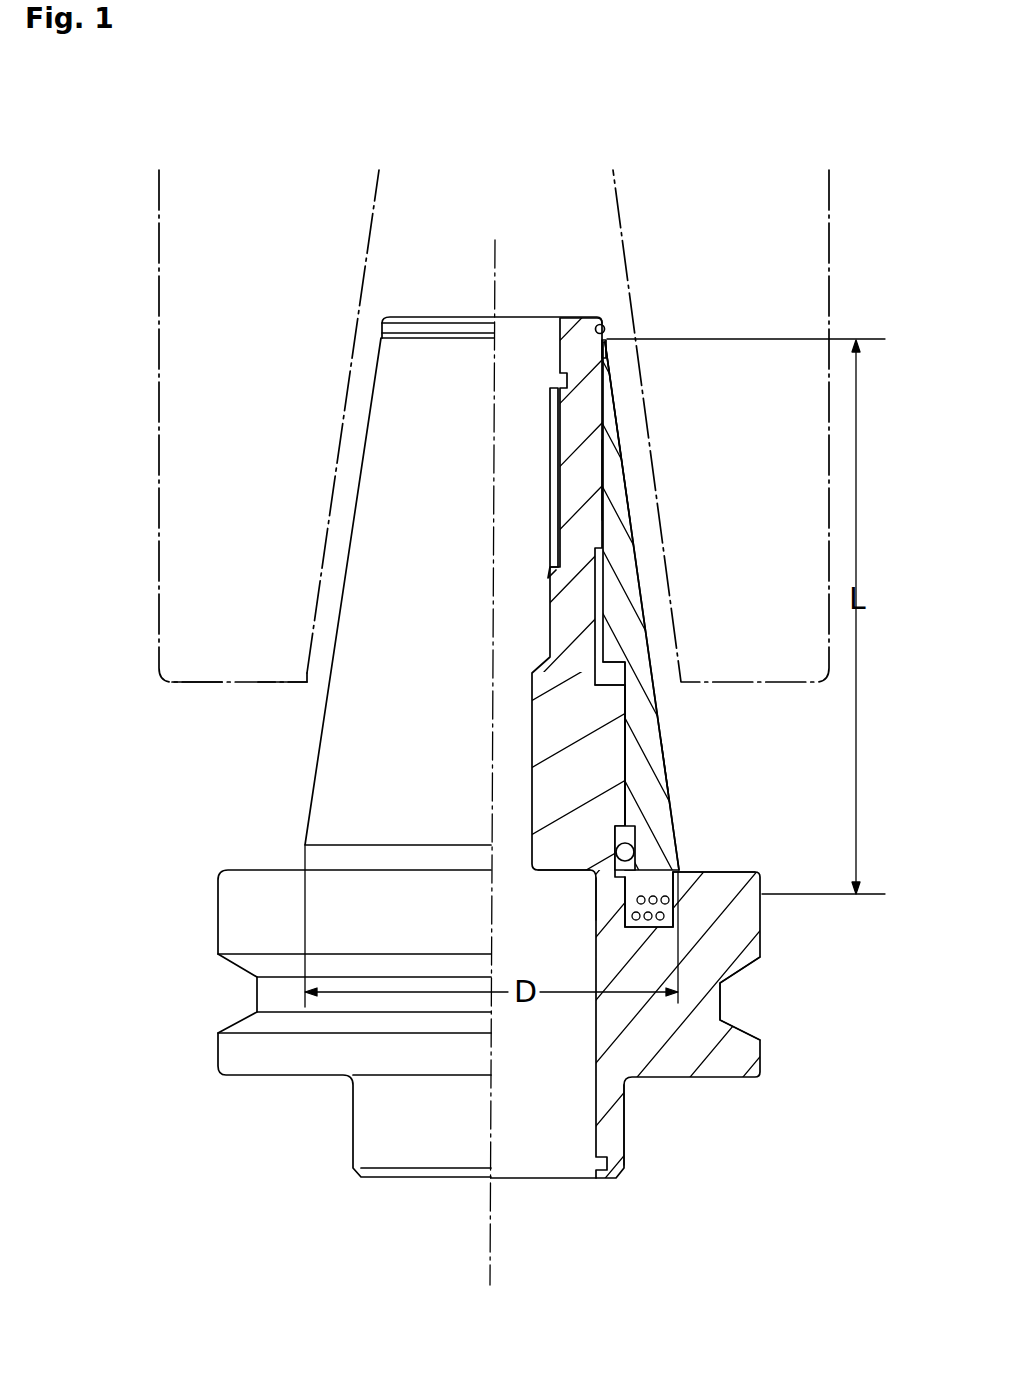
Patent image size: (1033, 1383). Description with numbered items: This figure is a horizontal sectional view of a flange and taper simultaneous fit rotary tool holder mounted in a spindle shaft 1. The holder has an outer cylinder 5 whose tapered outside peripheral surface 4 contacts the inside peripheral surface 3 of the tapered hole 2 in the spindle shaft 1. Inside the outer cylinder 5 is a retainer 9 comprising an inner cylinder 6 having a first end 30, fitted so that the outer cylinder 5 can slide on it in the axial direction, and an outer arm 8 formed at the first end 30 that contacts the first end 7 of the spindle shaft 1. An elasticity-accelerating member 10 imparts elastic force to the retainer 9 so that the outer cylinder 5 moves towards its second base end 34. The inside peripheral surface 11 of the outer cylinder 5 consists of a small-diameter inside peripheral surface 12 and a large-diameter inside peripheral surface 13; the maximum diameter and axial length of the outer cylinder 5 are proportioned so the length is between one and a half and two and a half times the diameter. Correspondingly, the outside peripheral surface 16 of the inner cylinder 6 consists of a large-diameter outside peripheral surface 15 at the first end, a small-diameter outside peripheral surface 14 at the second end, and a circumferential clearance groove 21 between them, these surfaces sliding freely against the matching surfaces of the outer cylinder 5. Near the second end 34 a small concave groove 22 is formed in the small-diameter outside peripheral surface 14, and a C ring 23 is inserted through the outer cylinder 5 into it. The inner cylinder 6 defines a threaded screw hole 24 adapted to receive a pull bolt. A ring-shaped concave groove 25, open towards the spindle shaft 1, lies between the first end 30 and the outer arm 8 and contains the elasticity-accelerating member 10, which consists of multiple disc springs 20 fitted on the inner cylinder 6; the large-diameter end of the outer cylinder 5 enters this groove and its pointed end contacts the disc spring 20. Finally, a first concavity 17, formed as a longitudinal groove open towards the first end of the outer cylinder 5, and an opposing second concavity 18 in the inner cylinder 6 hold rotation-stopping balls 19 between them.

The spindle shaft 1 is at (173, 695).
The tapered hole 2 is at (321, 645).
The inside peripheral surface 3 is at (330, 548).
The tapered outside peripheral surface 4 is at (643, 527).
The outer cylinder 5 is at (642, 583).
The inner cylinder 6 is at (580, 319).
The first end 7 is at (205, 683).
The outer arm 8 is at (218, 908).
The retainer 9 is at (765, 1059).
The elasticity-accelerating member 10 is at (740, 893).
The inside peripheral surface 11 is at (620, 732).
The small-diameter inside peripheral surface 12 is at (598, 478).
The large-diameter inside peripheral surface 13 is at (533, 870).
The small-diameter outside peripheral surface 14 is at (636, 470).
The large-diameter outside peripheral surface 15 is at (642, 757).
The outside peripheral surface 16 is at (627, 700).
The first concavity 17 is at (598, 880).
The second concavity 18 is at (640, 822).
The rotation-stopping balls 19 is at (665, 843).
The disc springs 20 is at (633, 850).
The circumferential clearance groove 21 is at (605, 632).
The small concave groove 22 is at (606, 328).
The C ring 23 is at (607, 334).
The threaded screw hole 24 is at (552, 392).
The ring-shaped concave groove 25 is at (630, 915).
The first end 30 is at (651, 1030).
The second end 34 is at (420, 304).